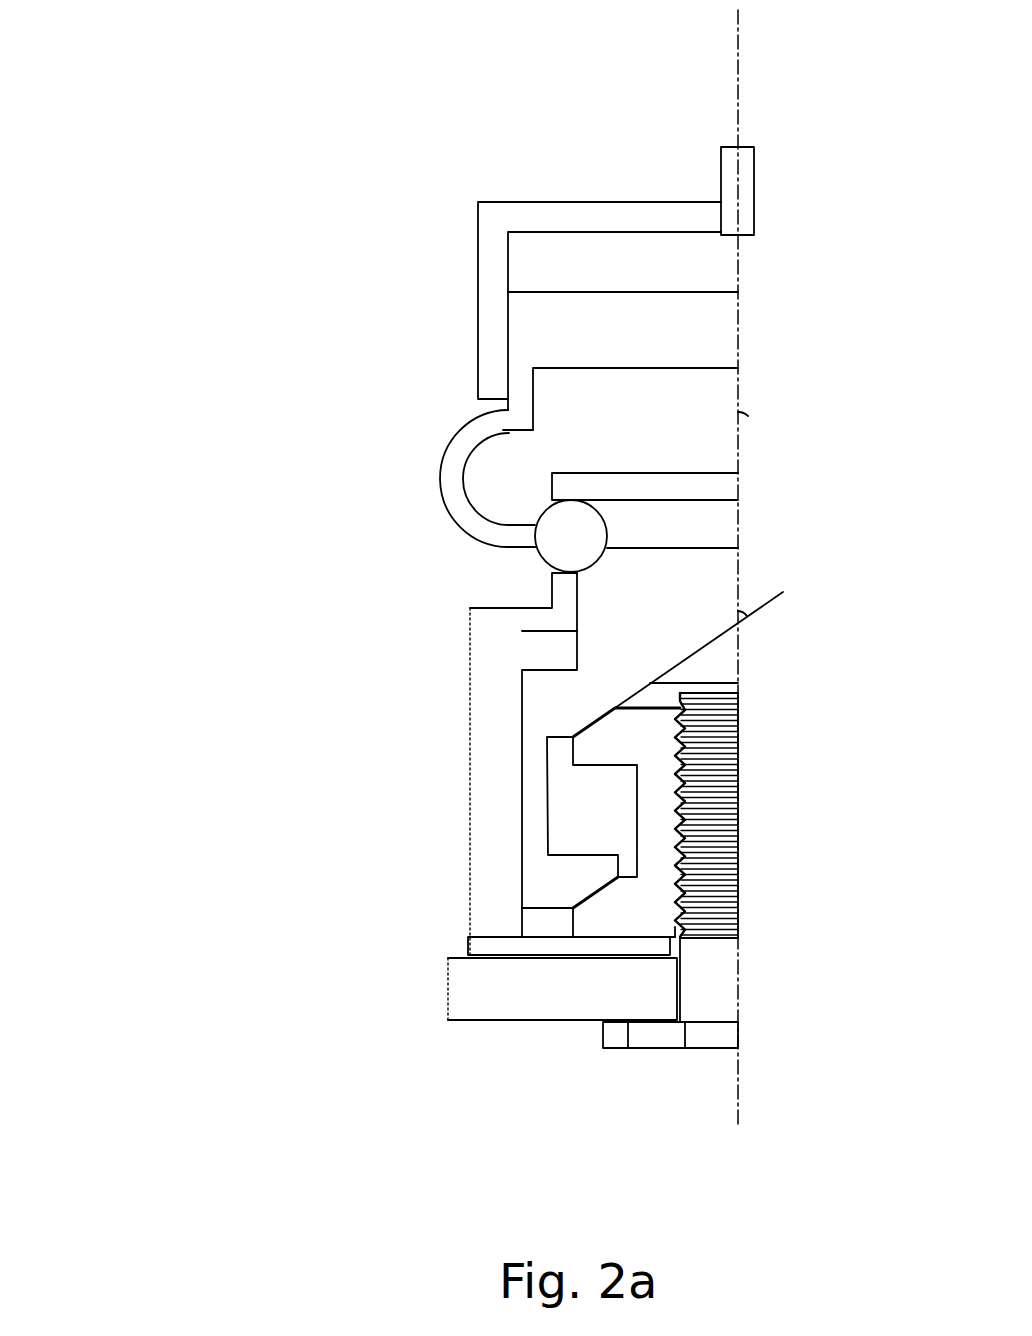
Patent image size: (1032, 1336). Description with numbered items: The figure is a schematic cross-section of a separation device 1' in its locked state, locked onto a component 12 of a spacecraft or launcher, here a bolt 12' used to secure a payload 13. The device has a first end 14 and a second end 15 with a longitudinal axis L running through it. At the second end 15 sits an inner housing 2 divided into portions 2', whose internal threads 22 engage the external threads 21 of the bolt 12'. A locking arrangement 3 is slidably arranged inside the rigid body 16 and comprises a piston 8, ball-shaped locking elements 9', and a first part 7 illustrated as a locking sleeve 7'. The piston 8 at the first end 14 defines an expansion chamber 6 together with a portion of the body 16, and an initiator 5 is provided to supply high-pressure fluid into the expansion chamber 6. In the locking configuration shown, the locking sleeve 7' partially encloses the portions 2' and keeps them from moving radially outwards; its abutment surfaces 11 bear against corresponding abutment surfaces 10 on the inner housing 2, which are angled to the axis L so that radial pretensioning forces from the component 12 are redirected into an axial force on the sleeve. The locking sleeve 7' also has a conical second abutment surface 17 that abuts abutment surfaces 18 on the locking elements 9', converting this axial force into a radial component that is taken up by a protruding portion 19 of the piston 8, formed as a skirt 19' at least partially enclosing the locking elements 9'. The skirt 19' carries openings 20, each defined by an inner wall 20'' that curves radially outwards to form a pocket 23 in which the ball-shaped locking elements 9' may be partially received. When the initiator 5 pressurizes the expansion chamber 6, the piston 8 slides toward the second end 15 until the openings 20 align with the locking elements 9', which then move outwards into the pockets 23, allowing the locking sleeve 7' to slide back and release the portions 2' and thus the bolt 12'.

The separation device 1' is at (236, 160).
The inner housing 2 is at (512, 807).
The portions of the inner housing 2' is at (721, 940).
The locking arrangement 3 is at (436, 549).
The initiator 5 is at (733, 173).
The expansion chamber 6 is at (530, 248).
The first part 7 is at (498, 755).
The locking sleeve 7' is at (644, 572).
The piston 8 is at (540, 332).
The locking elements 9' is at (478, 554).
The abutment surfaces 10 is at (683, 703).
The abutment surfaces 11 is at (683, 703).
The component 12 is at (669, 1045).
The bolt 12' is at (690, 1100).
The payload 13 is at (520, 1000).
The first end 14 is at (458, 243).
The second end 15 is at (428, 972).
The body 16 is at (487, 345).
The second abutment surfaces 17 is at (782, 382).
The abutment surfaces 18 is at (663, 615).
The protruding portion 19 is at (379, 436).
The skirt 19' is at (413, 459).
The openings 20 is at (657, 358).
The inner wall 20'' is at (390, 497).
The external threads 21 is at (707, 815).
The internal threads 22 is at (683, 778).
The pocket 23 is at (485, 477).
The longitudinal axis L is at (738, 75).